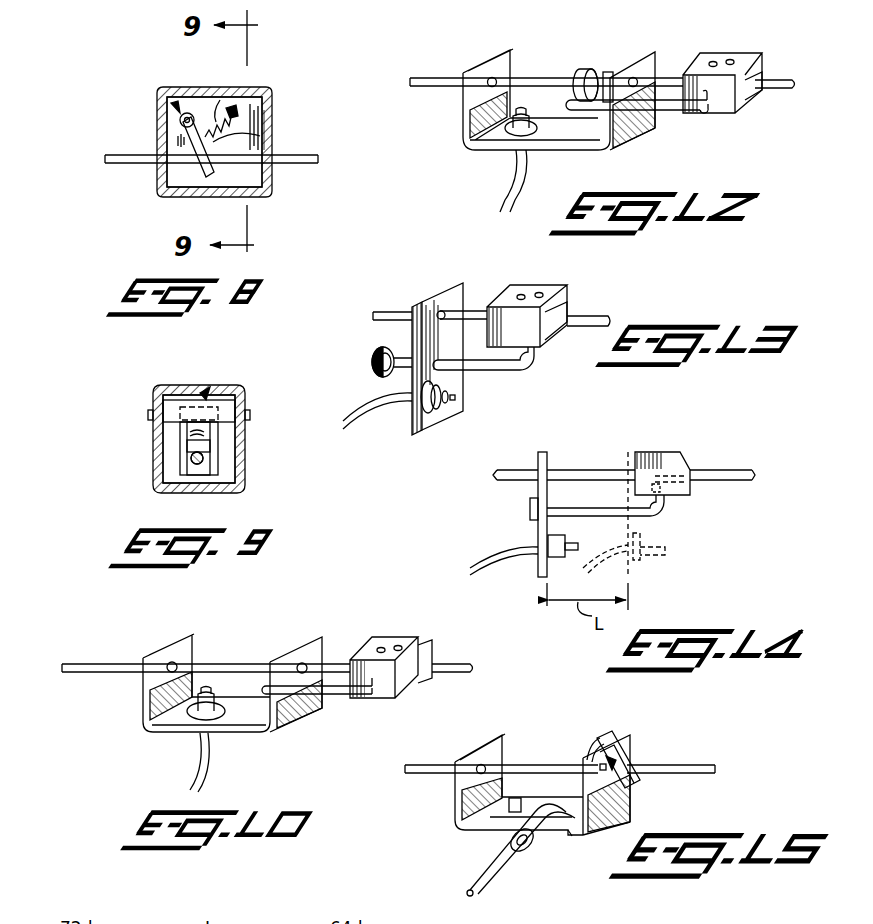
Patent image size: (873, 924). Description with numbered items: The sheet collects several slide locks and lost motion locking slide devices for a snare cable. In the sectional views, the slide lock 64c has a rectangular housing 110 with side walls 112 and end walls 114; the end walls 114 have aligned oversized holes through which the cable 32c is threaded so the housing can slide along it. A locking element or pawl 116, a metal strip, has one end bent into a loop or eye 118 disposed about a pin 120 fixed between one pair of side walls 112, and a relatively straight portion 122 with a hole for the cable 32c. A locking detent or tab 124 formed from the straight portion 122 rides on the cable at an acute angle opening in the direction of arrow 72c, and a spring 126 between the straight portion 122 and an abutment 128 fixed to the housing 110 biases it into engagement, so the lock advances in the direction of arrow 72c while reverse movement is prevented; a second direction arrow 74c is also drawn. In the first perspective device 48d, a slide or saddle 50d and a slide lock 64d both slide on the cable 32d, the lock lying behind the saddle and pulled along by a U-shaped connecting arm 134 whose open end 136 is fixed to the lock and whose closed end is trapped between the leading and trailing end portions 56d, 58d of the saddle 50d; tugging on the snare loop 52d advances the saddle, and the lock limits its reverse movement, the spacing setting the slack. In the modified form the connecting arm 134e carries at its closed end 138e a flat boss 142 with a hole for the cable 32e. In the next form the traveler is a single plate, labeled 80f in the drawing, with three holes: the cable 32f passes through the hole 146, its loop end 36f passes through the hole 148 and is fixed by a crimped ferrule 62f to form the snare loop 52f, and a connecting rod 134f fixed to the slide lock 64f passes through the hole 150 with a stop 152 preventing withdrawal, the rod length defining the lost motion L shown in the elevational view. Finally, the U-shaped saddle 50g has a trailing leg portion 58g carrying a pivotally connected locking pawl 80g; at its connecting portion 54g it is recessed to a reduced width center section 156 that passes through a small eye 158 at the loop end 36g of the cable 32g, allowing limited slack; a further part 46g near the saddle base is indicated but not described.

In FIG. 8, the arrow 72c is at (105, 15).
In FIG. 8, the section direction arrow 74c is at (357, 37).
In FIG. 8, the rectangular housing 110 is at (179, 200).
In FIG. 9, the rectangular housing 110 is at (166, 496).
In FIG. 8, the side walls 112 is at (209, 87).
In FIG. 9, the side walls 112 is at (182, 388).
In FIG. 8, the end walls 114 is at (276, 124).
In FIG. 9, the end walls 114 is at (226, 465).
In FIG. 8, the locking element or pawl 116 is at (176, 108).
In FIG. 9, the locking element or pawl 116 is at (207, 394).
In FIG. 8, the loop or eye 118 is at (180, 124).
In FIG. 8, the pin 120 is at (187, 112).
In FIG. 8, the straight portion 122 is at (210, 180).
In FIG. 8, the locking detent or tab 124 is at (262, 141).
In FIG. 9, the locking detent or tab 124 is at (208, 447).
In FIG. 8, the spring 126 is at (236, 104).
In FIG. 8, the abutment 128 is at (238, 112).
In FIG. 9, the abutment 128 is at (228, 406).
In FIG. 8, the cable 32c is at (303, 164).
In FIG. 9, the cable 32c is at (199, 465).
In FIG. 8, the slide lock 64c is at (273, 200).
In FIG. 9, the slide lock 64c is at (248, 382).
In FIG. 10, the cable 32d is at (462, 652).
In FIG. 10, the lost motion locking slide device 48d is at (272, 636).
In FIG. 10, the slide or saddle 50d is at (227, 698).
In FIG. 10, the snare loop 52d is at (194, 770).
In FIG. 10, the leading end portion 56d is at (162, 652).
In FIG. 10, the trailing end portion 58d is at (306, 650).
In FIG. 10, the slide lock 64d is at (398, 636).
In FIG. 10, the connecting member or arm 134 is at (330, 705).
In FIG. 10, the open end 136 is at (266, 686).
In FIG. 12, the cable 32e is at (790, 78).
In FIG. 12, the flat boss 142 is at (578, 72).
In FIG. 12, the closed end 138e is at (607, 71).
In FIG. 12, the connecting arm 134e is at (648, 122).
In FIG. 13, the cable 32f is at (604, 318).
In FIG. 14, the cable 32f is at (718, 474).
In FIG. 13, the mounting plate 80f is at (432, 284).
In FIG. 14, the mounting plate 80f is at (548, 452).
In FIG. 13, the hole 146 is at (450, 308).
In FIG. 14, the hole 146 is at (548, 476).
In FIG. 13, the slide lock 64f is at (552, 285).
In FIG. 14, the slide lock 64f is at (672, 452).
In FIG. 13, the connecting member or arm 134f is at (532, 373).
In FIG. 14, the connecting member or arm 134f is at (614, 505).
In FIG. 13, the stop 152 is at (384, 348).
In FIG. 14, the stop 152 is at (531, 515).
In FIG. 13, the hole 150 is at (450, 370).
In FIG. 14, the hole 150 is at (556, 519).
In FIG. 13, the loop end 36f is at (456, 400).
In FIG. 14, the loop end 36f is at (566, 552).
In FIG. 13, the crimped ferrule 62f is at (447, 408).
In FIG. 13, the snare loop 52f is at (366, 421).
In FIG. 14, the snare loop 52f is at (470, 562).
In FIG. 13, the hole 148 is at (428, 414).
In FIG. 14, the hole 148 is at (534, 558).
In FIG. 15, the cable 32g is at (681, 770).
In FIG. 15, the locking pawl 80g is at (594, 738).
In FIG. 15, the reduced width center section 156 is at (517, 798).
In FIG. 15, the loop or eye 158 is at (543, 800).
In FIG. 15, the trailing leg portion 58g is at (622, 800).
In FIG. 15, the saddle 50g is at (526, 808).
In FIG. 15, the connecting portion 54g is at (572, 846).
In FIG. 15, the loop end 36g is at (518, 850).
In FIG. 15, the bracket base 46g is at (592, 847).